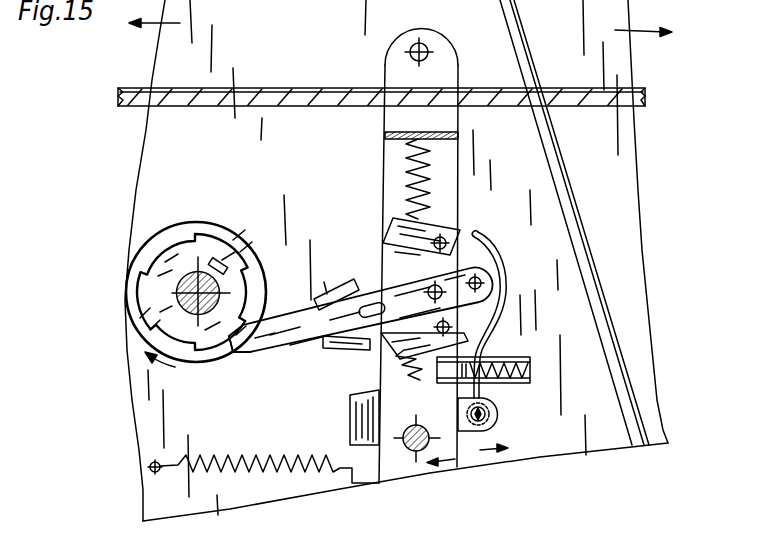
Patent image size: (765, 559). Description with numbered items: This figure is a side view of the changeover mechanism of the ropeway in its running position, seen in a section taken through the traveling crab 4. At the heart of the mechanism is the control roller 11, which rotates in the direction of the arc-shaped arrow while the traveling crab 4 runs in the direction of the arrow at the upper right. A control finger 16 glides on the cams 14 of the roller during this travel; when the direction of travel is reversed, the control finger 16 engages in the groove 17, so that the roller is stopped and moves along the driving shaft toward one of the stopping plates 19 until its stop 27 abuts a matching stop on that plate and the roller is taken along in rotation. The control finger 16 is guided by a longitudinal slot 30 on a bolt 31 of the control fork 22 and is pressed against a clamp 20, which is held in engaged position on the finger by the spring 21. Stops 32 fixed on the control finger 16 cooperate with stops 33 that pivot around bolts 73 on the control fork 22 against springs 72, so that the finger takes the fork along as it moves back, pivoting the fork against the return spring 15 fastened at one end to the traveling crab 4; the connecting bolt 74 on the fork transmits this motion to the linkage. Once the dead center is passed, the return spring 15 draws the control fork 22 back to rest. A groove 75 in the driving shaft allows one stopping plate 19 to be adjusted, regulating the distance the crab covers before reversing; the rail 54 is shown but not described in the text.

The traveling crab 4 is at (568, 437).
The control roller 11 is at (163, 325).
The cams 14 is at (168, 248).
The return spring 15 is at (262, 468).
The control finger 16 is at (266, 356).
The groove 17 is at (145, 303).
The stopping plates 19 is at (137, 290).
The clamp 20 is at (497, 268).
The spring 21 is at (530, 365).
The control fork 22 is at (430, 413).
The stop 27 is at (210, 259).
The longitudinal slot 30 is at (433, 290).
The bolt 31 is at (458, 275).
The stops 32 is at (350, 349).
The stops 33 is at (435, 325).
The guide rail 54 is at (640, 96).
The springs 72 is at (408, 193).
The bolts 73 is at (468, 327).
The connecting bolt 74 is at (428, 412).
The groove 75 is at (190, 272).